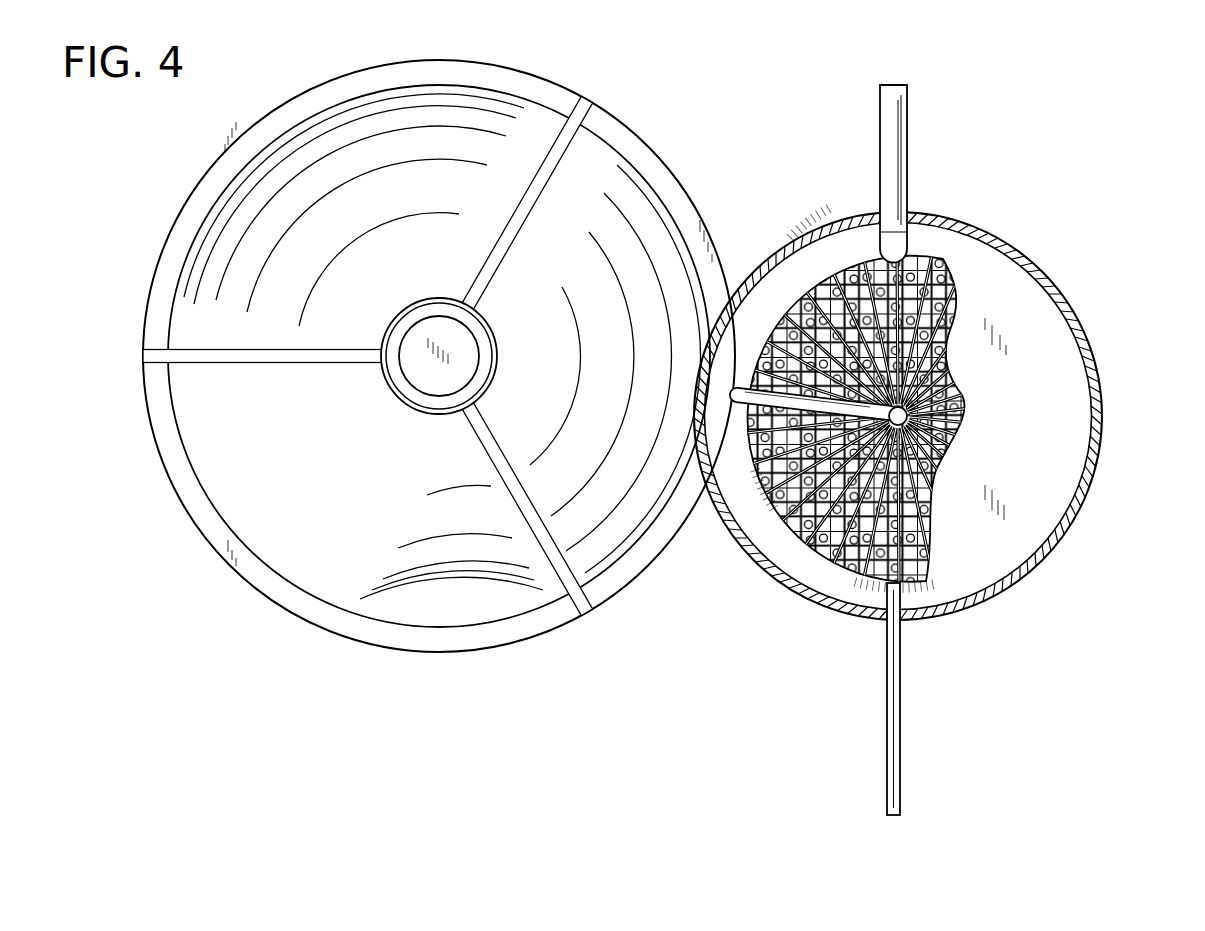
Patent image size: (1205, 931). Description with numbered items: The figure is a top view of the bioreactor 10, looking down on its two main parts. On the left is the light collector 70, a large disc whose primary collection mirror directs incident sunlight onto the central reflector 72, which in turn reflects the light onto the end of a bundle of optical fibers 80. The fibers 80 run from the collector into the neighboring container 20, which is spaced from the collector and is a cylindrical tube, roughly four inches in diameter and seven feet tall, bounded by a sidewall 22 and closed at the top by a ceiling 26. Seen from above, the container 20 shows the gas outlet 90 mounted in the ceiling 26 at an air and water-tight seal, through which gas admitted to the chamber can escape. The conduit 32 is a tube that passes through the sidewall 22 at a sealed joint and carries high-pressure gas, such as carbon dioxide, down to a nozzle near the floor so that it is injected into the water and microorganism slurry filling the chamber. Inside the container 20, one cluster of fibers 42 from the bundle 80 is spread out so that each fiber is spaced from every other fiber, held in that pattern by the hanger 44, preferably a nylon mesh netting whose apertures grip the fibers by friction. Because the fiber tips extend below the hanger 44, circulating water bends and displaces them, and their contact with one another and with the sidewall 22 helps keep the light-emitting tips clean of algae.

The bioreactor 10 is at (946, 450).
The container 20 is at (946, 416).
The sidewall 22 is at (1100, 391).
The ceiling 26 is at (1047, 367).
The conduit 32 is at (898, 720).
The fibers 42 is at (795, 545).
The hanger 44 is at (845, 255).
The light collector 70 is at (421, 356).
The reflector 72 is at (418, 373).
The optical fibers 80 is at (782, 398).
The gas outlet 90 is at (897, 133).